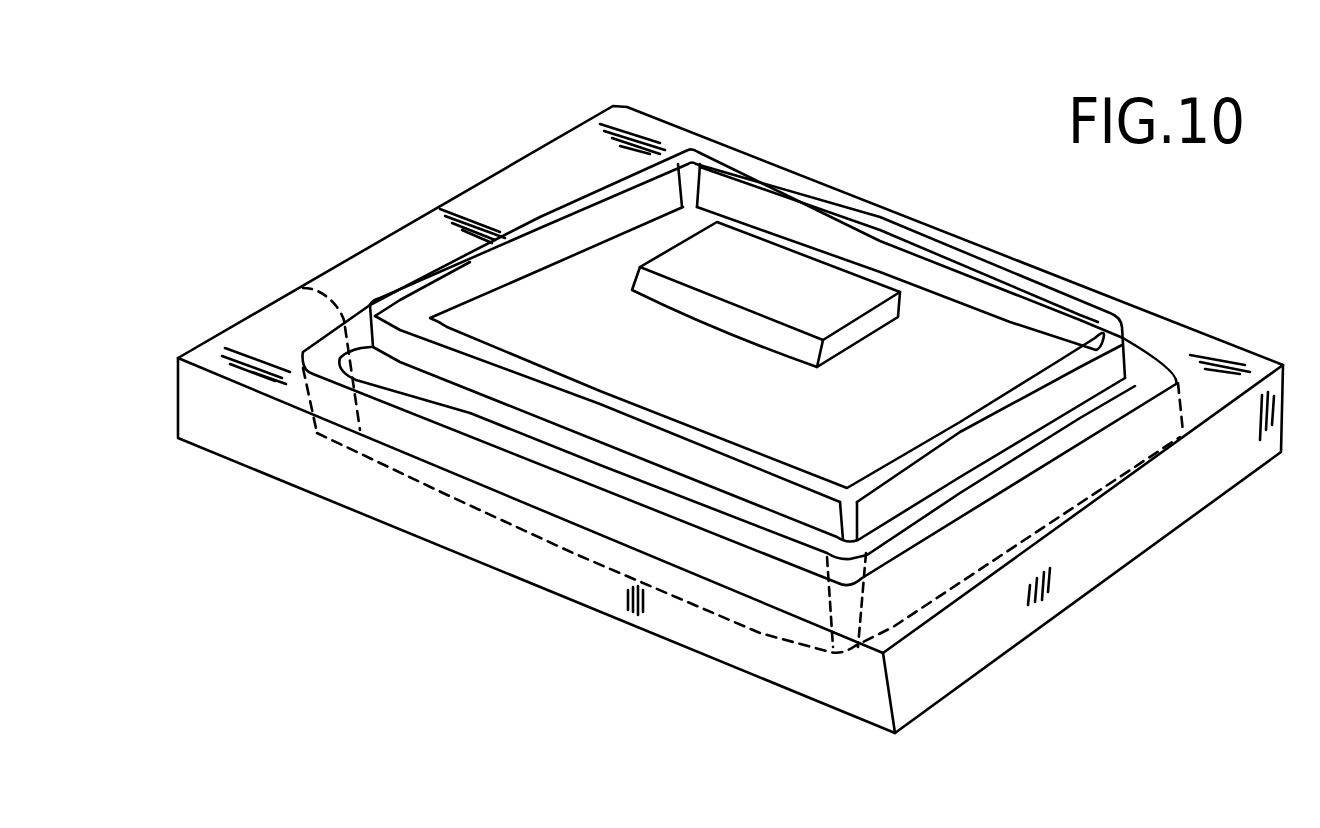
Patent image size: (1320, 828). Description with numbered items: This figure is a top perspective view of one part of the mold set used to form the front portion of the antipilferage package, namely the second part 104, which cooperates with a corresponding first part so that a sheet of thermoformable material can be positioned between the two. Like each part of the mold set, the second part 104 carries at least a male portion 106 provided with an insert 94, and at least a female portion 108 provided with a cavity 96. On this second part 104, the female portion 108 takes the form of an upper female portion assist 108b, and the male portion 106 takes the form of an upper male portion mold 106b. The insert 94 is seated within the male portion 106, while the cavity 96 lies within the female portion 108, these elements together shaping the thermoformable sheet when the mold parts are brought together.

The second part 104 is at (298, 202).
The female portion 108 is at (1144, 342).
The upper female portion assist 108b is at (480, 432).
The insert 94 is at (965, 260).
The male portion 106 is at (1013, 303).
The upper male portion mold 106b is at (985, 447).
The cavity 96 is at (302, 288).